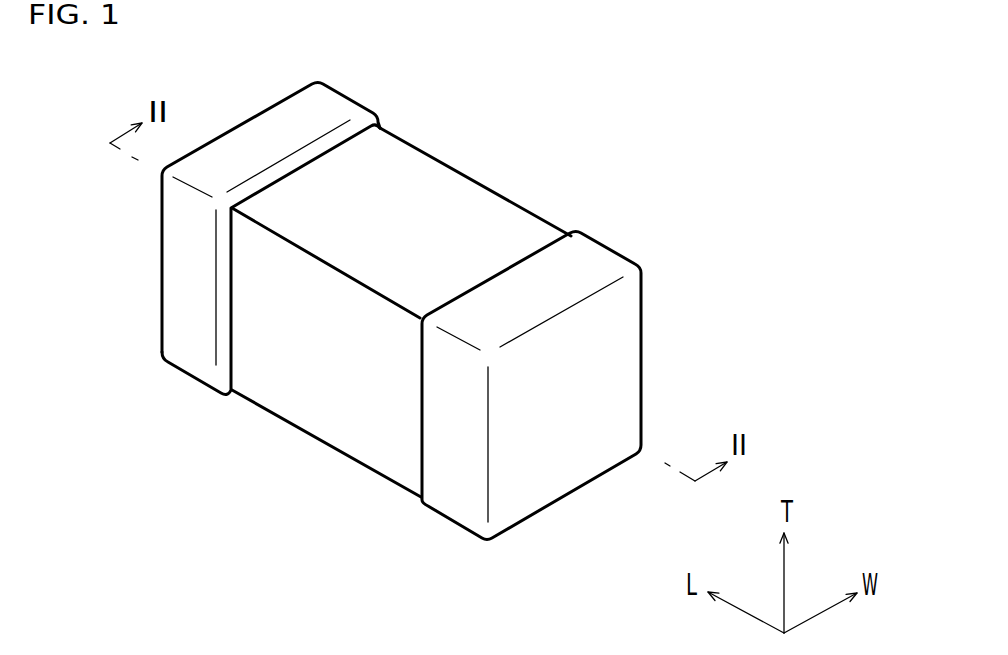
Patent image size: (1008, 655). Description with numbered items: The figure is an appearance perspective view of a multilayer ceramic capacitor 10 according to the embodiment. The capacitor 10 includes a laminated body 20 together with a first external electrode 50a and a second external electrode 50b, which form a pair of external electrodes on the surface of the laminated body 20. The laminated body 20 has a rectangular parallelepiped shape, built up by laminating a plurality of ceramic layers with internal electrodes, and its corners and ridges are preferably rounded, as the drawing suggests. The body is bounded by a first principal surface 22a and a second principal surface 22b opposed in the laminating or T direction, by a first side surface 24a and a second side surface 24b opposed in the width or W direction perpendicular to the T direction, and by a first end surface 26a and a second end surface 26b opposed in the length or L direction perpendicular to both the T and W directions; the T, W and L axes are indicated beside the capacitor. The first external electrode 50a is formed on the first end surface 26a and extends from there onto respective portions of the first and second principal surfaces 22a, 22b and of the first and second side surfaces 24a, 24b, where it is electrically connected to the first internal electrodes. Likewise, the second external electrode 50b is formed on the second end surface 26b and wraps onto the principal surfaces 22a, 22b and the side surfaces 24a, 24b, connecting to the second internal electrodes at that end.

The multilayer ceramic capacitor 10 is at (607, 126).
The laminated body 20 is at (448, 164).
The first principal surface 22a is at (480, 220).
The second principal surface 22b is at (282, 415).
The first side surface 24a is at (383, 447).
The second side surface 24b is at (543, 217).
The first end surface 26a is at (610, 360).
The second end surface 26b is at (157, 288).
The first external electrode 50a is at (541, 512).
The second external electrode 50b is at (160, 260).